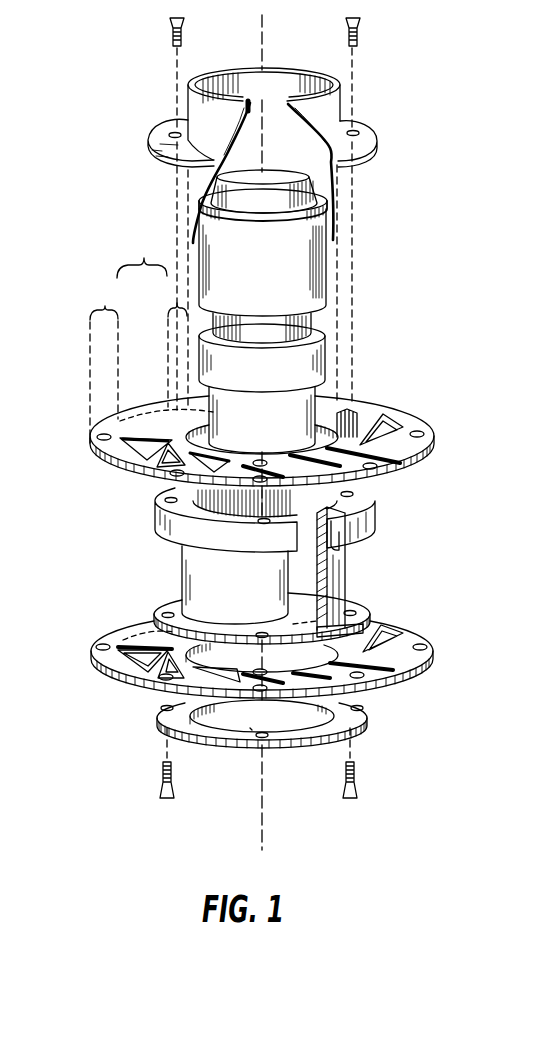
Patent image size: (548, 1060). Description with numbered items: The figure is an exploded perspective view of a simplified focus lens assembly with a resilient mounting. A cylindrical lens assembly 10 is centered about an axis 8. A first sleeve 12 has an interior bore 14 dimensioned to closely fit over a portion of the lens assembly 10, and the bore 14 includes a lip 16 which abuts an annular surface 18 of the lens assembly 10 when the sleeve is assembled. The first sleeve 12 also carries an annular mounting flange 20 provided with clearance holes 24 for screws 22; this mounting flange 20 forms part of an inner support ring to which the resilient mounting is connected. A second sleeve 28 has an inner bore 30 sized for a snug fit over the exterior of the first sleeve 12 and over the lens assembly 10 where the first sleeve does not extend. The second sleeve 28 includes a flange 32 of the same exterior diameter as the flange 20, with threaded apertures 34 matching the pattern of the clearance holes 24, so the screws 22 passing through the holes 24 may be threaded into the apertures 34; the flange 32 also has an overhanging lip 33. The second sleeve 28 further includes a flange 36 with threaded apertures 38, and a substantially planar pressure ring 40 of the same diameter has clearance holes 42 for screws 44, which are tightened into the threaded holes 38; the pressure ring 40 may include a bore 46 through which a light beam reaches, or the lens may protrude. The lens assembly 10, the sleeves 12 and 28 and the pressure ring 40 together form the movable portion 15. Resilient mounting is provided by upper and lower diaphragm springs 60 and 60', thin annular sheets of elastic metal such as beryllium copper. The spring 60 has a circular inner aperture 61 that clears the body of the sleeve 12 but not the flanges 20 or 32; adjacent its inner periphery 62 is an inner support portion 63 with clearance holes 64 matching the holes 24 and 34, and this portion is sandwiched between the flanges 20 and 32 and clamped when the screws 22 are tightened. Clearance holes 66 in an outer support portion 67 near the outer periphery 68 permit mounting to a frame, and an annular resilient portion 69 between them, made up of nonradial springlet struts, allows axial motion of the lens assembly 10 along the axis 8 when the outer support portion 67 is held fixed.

The axis 8 is at (266, 22).
The lens assembly 10 is at (315, 269).
The first sleeve 12 is at (330, 193).
The interior bore 14 is at (276, 160).
The movable portion 15 is at (376, 328).
The lip 16 is at (252, 103).
The annular surface 18 is at (320, 216).
The annular mounting flange 20 is at (372, 154).
The screws 22 is at (170, 30).
The clearance holes 24 is at (172, 132).
The second sleeve 28 is at (190, 567).
The inner bore 30 is at (180, 488).
The flange 32 is at (368, 520).
The overhanging lip 33 is at (335, 547).
The threaded apertures 34 is at (165, 497).
The further flange 36 is at (370, 626).
The threaded apertures 38 is at (168, 612).
The pressure ring 40 is at (367, 722).
The clearance holes 42 is at (158, 703).
The screws 44 is at (163, 785).
The bore 46 is at (247, 728).
The upper diaphragm spring 60 is at (259, 325).
The lower diaphragm spring 60' is at (292, 659).
The circular inner aperture 61 is at (223, 449).
The inner periphery 62 is at (333, 424).
The inner support portion 63 is at (180, 297).
The clearance holes 64 is at (172, 440).
The clearance holes 66 is at (103, 437).
The outer support portion 67 is at (105, 357).
The outer periphery 68 is at (93, 455).
The resilient portion 69 is at (142, 254).